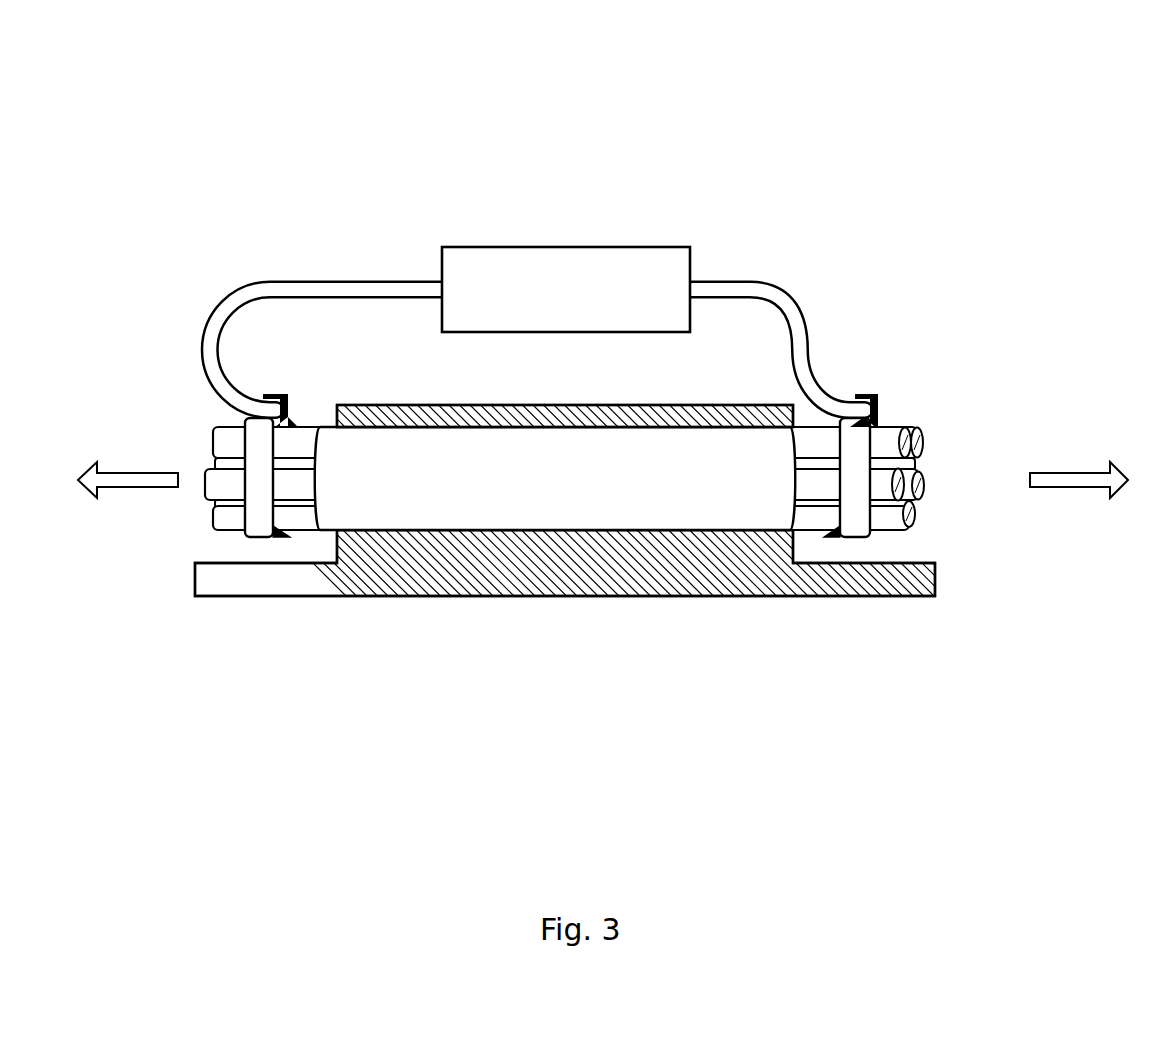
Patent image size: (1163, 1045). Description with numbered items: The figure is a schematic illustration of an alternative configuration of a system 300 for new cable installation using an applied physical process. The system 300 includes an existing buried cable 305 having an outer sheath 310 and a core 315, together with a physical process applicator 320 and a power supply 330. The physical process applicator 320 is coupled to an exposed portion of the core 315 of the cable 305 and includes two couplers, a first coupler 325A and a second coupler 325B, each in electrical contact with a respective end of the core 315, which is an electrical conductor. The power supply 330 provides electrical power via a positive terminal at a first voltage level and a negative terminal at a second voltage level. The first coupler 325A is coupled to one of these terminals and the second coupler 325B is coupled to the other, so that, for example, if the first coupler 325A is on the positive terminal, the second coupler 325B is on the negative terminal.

The system 300 is at (897, 822).
The existing buried cable 305 is at (927, 427).
The outer sheath 310 is at (327, 427).
The core 315 is at (302, 427).
The physical process applicator 320 is at (217, 253).
The first coupler 325A is at (247, 532).
The second coupler 325B is at (868, 537).
The power supply 330 is at (565, 247).